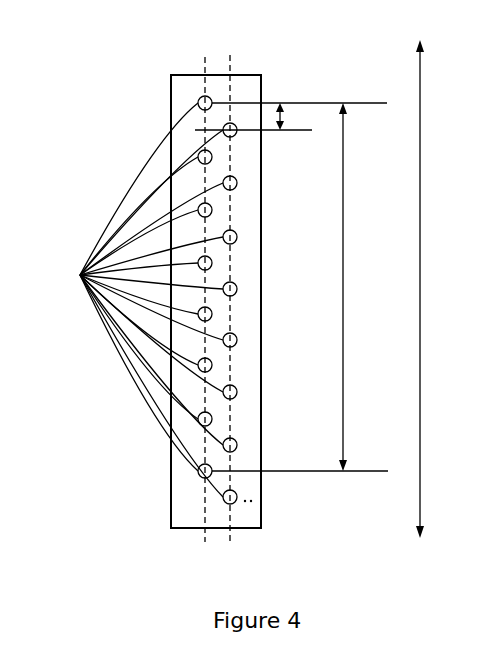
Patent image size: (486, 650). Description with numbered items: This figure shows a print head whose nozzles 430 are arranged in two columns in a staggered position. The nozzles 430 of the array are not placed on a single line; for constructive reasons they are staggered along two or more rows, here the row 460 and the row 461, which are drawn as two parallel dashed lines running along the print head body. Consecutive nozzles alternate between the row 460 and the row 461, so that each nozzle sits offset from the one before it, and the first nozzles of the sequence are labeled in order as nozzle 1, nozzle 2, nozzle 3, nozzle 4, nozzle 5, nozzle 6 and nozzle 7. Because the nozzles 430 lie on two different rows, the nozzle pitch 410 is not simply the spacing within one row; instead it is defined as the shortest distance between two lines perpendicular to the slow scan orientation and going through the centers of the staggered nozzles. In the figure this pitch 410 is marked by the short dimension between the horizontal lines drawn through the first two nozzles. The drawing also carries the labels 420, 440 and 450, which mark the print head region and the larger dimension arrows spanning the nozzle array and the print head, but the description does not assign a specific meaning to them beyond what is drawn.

The nozzle pitch 410 is at (257, 116).
The aperture plate 420 is at (258, 490).
The nozzles 430 is at (133, 300).
The plate length 440 is at (420, 248).
The aperture array length 450 is at (300, 287).
The row 460 is at (205, 62).
The row 461 is at (230, 64).
The first aperture 1 is at (211, 103).
The second aperture 2 is at (236, 130).
The third aperture 3 is at (211, 157).
The fourth aperture 4 is at (236, 183).
The fifth aperture 5 is at (211, 210).
The sixth aperture 6 is at (236, 237).
The seventh aperture 7 is at (211, 263).